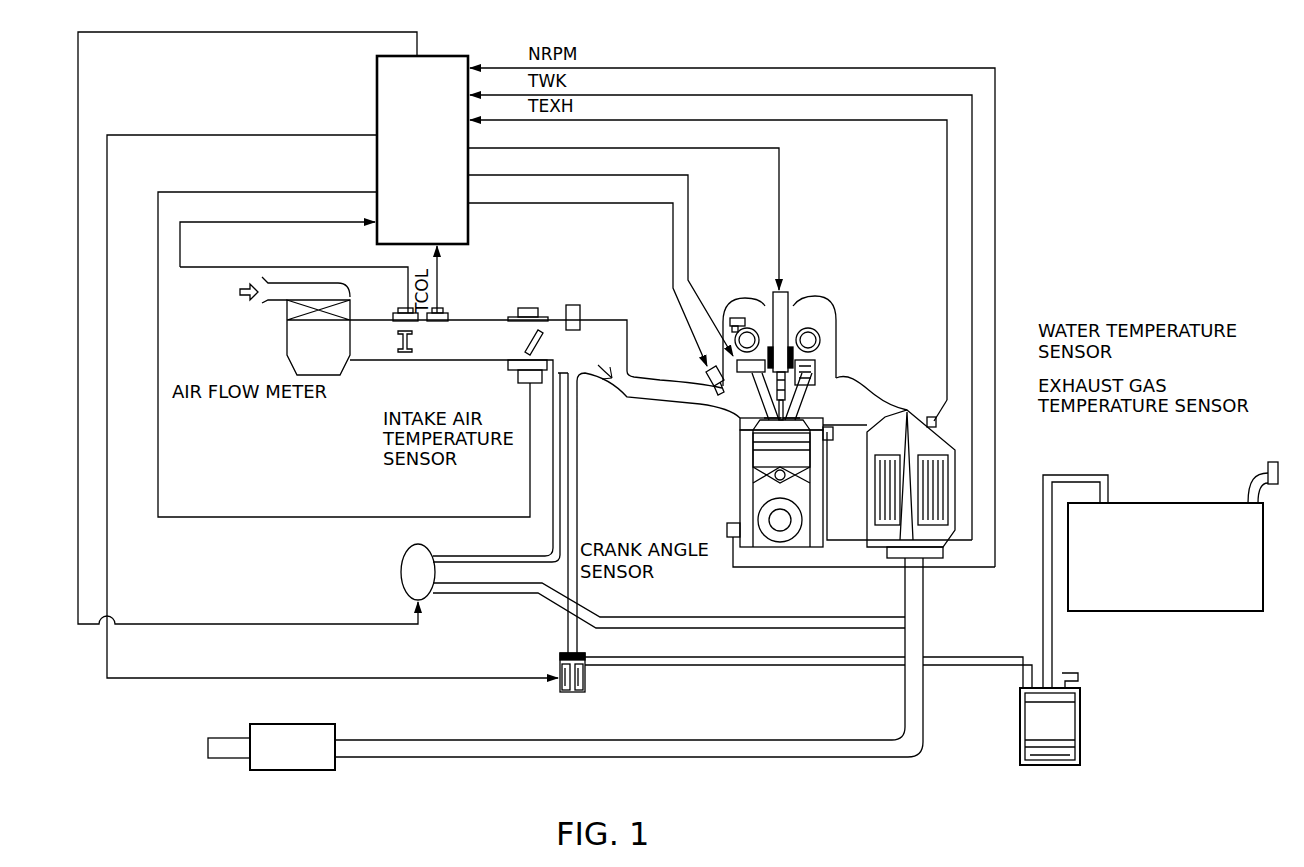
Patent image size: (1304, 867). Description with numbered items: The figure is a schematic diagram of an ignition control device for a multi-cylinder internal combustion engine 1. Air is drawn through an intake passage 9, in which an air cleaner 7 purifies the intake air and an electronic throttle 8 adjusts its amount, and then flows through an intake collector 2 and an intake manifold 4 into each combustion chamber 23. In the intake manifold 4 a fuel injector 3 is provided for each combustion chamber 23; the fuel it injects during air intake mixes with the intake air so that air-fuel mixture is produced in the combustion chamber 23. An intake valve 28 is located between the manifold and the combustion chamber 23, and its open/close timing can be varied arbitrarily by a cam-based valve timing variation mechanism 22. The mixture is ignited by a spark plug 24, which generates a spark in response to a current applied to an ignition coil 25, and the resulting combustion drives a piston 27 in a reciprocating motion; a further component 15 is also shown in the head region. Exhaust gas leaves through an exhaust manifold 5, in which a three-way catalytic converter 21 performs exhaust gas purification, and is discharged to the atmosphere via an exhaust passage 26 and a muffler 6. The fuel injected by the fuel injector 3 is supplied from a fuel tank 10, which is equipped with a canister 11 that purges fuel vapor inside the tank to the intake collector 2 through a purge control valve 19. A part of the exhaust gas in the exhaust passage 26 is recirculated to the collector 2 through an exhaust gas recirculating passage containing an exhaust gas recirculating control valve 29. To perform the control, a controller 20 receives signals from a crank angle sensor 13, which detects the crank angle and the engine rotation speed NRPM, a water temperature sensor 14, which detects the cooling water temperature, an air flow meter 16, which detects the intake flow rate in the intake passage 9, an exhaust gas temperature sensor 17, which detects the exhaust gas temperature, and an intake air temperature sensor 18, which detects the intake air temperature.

The internal combustion engine 1 is at (843, 312).
The intake collector 2 is at (629, 332).
The fuel injector 3 is at (704, 378).
The intake manifold 4 is at (645, 400).
The exhaust manifold 5 is at (845, 390).
The muffler 6 is at (284, 724).
The air cleaner 7 is at (287, 331).
The electronic throttle 8 is at (527, 345).
The intake passage 9 is at (457, 320).
The fuel tank 10 is at (1185, 503).
The canister 11 is at (1020, 716).
The crank angle sensor 13 is at (727, 529).
The water temperature sensor 14 is at (835, 430).
The spark plug 15 is at (752, 320).
The air flow meter 16 is at (400, 345).
The exhaust gas temperature sensor 17 is at (937, 420).
The intake air temperature sensor 18 is at (440, 322).
The purge control valve 19 is at (558, 668).
The controller 20 is at (377, 64).
The three-way catalytic converter 21 is at (893, 492).
The valve timing variation mechanism 22 is at (748, 391).
The combustion chamber 23 is at (760, 433).
The spark plug 24 is at (766, 455).
The ignition coil 25 is at (782, 290).
The exhaust passage 26 is at (745, 760).
The piston 27 is at (748, 475).
The intake valve 28 is at (746, 427).
The exhaust gas recirculating control valve 29 is at (402, 568).